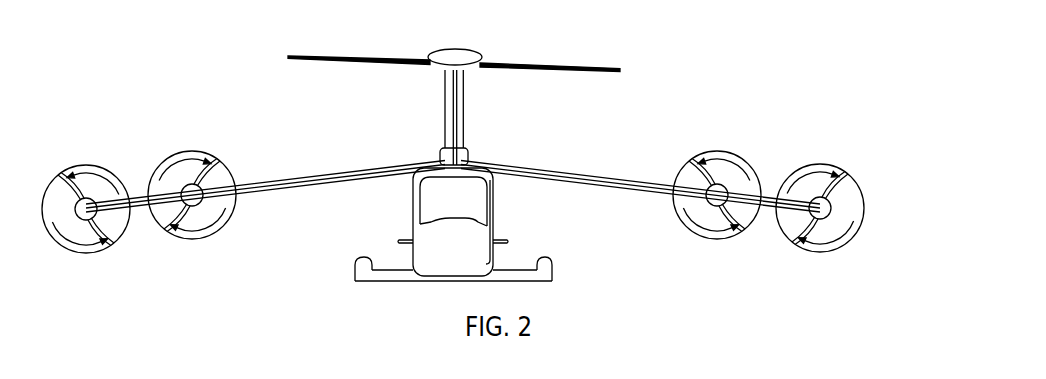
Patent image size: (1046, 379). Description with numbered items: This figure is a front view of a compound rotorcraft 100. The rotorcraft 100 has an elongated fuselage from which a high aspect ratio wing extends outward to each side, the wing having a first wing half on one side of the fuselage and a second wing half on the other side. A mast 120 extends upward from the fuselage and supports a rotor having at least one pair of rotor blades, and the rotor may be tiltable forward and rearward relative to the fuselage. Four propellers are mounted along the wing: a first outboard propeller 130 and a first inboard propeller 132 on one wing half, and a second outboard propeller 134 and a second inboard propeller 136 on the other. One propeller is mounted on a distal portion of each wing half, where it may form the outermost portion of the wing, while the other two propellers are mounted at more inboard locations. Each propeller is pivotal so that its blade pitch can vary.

The compound rotorcraft 100 is at (643, 80).
The mast 120 is at (466, 116).
The first outboard propeller 130 is at (88, 203).
The first inboard propeller 132 is at (193, 188).
The second outboard propeller 134 is at (823, 199).
The second inboard propeller 136 is at (720, 186).